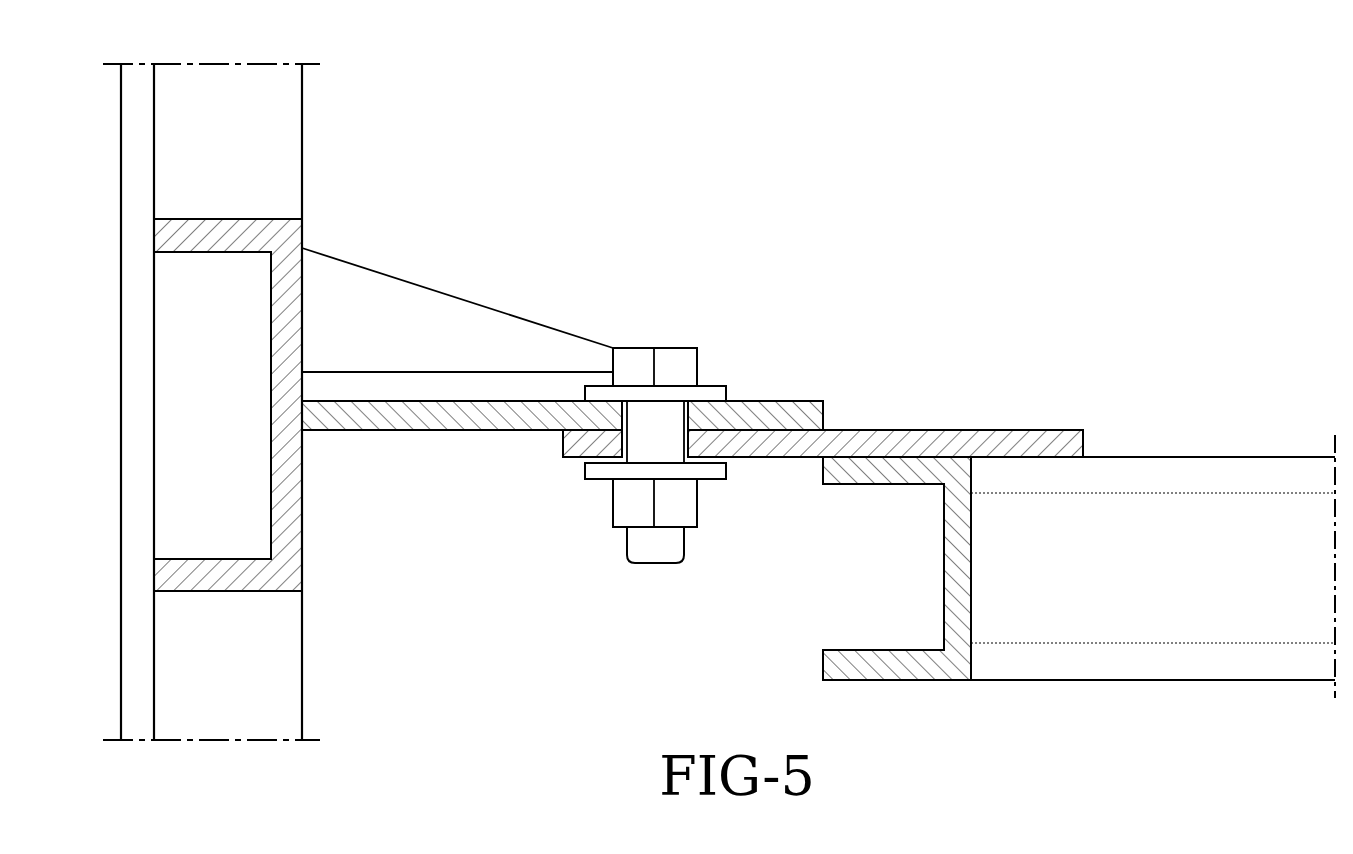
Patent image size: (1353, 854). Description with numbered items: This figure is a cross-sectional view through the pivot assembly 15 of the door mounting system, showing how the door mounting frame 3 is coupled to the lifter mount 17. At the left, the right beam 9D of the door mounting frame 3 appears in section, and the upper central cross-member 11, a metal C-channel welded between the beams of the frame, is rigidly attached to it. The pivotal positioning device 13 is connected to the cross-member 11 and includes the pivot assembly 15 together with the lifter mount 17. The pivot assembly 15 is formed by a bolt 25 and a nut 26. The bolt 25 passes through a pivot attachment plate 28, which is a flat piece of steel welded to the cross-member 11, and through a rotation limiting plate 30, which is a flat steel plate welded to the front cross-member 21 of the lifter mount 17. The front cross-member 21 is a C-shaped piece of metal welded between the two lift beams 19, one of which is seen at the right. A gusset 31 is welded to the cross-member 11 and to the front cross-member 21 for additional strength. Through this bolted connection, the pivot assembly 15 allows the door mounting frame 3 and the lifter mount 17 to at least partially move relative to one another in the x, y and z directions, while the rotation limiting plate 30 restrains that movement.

The door mounting frame 3 is at (305, 664).
The right beam 9D is at (303, 145).
The upper central cross-member 11 is at (298, 490).
The pivotal positioning device 13 is at (733, 491).
The pivot assembly 15 is at (664, 403).
The lifter mount 17 is at (1255, 455).
The lift beam 19 is at (1188, 470).
The front cross-member 21 is at (946, 568).
The bolt 25 is at (638, 355).
The nut 26 is at (700, 512).
The pivot attachment plate 28 is at (490, 438).
The rotation limiting plate 30 is at (773, 458).
The gusset 31 is at (435, 303).